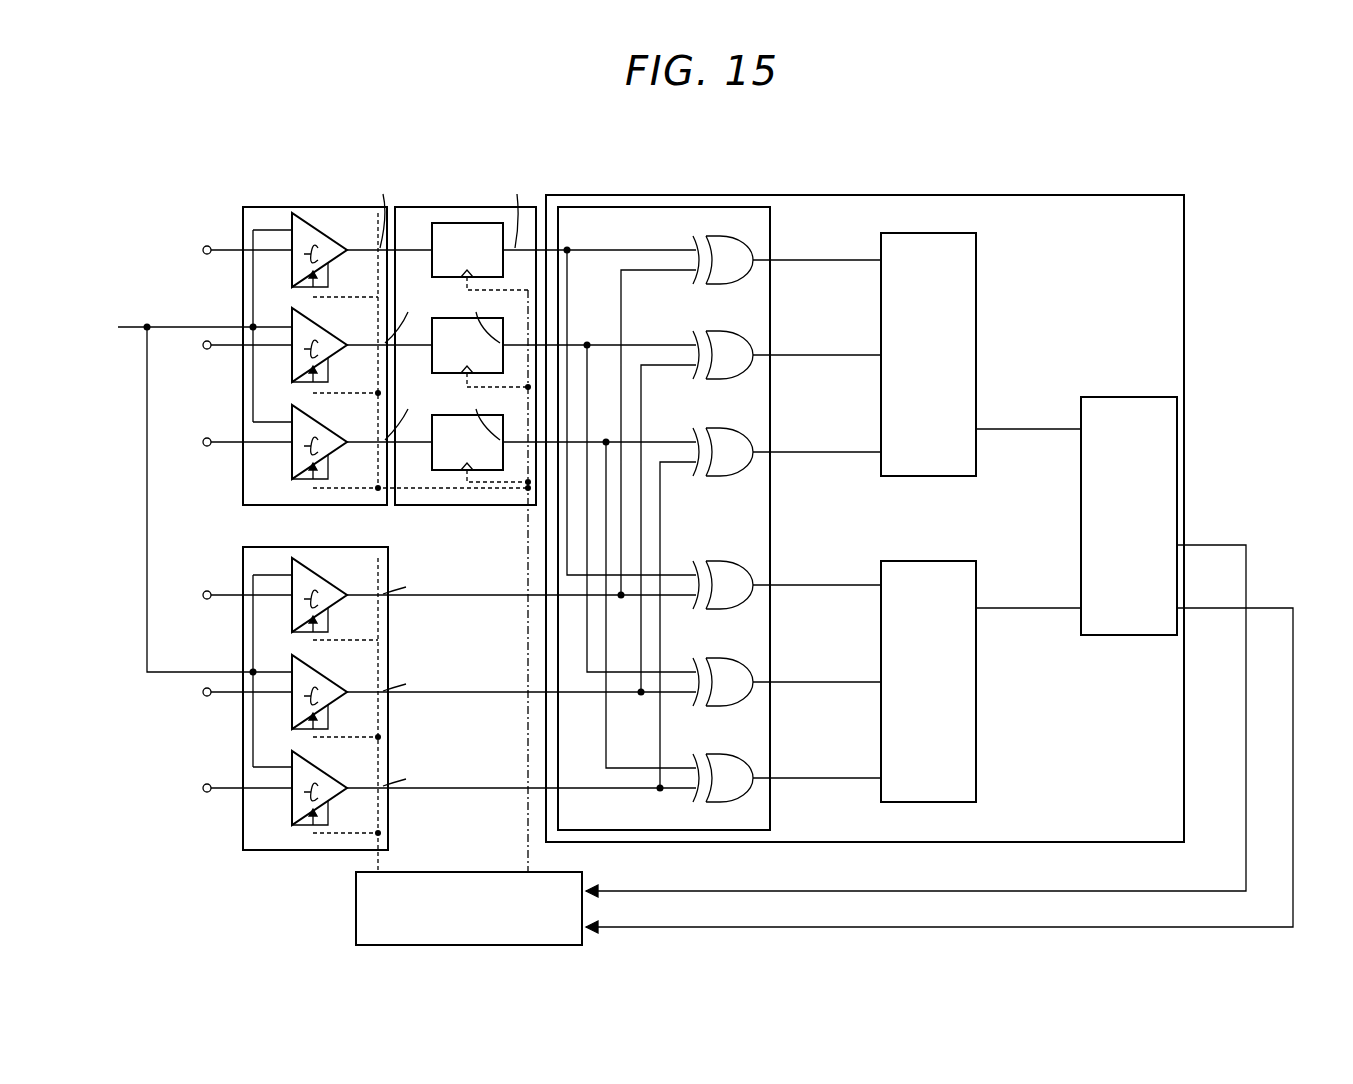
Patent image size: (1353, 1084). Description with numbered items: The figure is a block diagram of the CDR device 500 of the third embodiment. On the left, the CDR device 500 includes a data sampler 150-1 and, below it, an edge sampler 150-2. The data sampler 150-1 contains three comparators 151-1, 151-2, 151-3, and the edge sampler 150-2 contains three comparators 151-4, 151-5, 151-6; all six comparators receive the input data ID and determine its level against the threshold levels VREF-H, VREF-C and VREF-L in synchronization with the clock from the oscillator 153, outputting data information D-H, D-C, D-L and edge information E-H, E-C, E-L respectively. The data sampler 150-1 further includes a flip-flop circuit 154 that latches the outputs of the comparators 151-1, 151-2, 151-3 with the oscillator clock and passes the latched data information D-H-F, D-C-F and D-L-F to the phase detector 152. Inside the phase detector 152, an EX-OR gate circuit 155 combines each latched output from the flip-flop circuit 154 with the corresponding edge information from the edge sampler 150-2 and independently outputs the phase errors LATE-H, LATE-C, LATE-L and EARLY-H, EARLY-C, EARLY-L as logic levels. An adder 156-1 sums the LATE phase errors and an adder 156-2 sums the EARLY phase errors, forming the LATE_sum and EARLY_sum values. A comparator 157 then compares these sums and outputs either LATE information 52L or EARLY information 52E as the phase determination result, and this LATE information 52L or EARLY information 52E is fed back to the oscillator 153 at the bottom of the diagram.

The CDR device 500 is at (734, 144).
The data sampler 150-1 is at (345, 174).
The edge sampler 150-2 is at (433, 534).
The comparator 151-1 is at (339, 247).
The comparator 151-2 is at (339, 342).
The comparator 151-3 is at (339, 439).
The comparator 151-4 is at (339, 592).
The comparator 151-5 is at (339, 689).
The comparator 151-6 is at (339, 785).
The phase detector 152 is at (916, 174).
The oscillator 153 is at (356, 905).
The flip-flop circuit 154 is at (465, 207).
The EX-OR gate circuit 155 is at (660, 207).
The adder 156-1 is at (929, 233).
The adder 156-2 is at (929, 561).
The comparator 157 is at (1131, 397).
The LATE information 52L is at (1252, 545).
The EARLY information 52E is at (1283, 608).